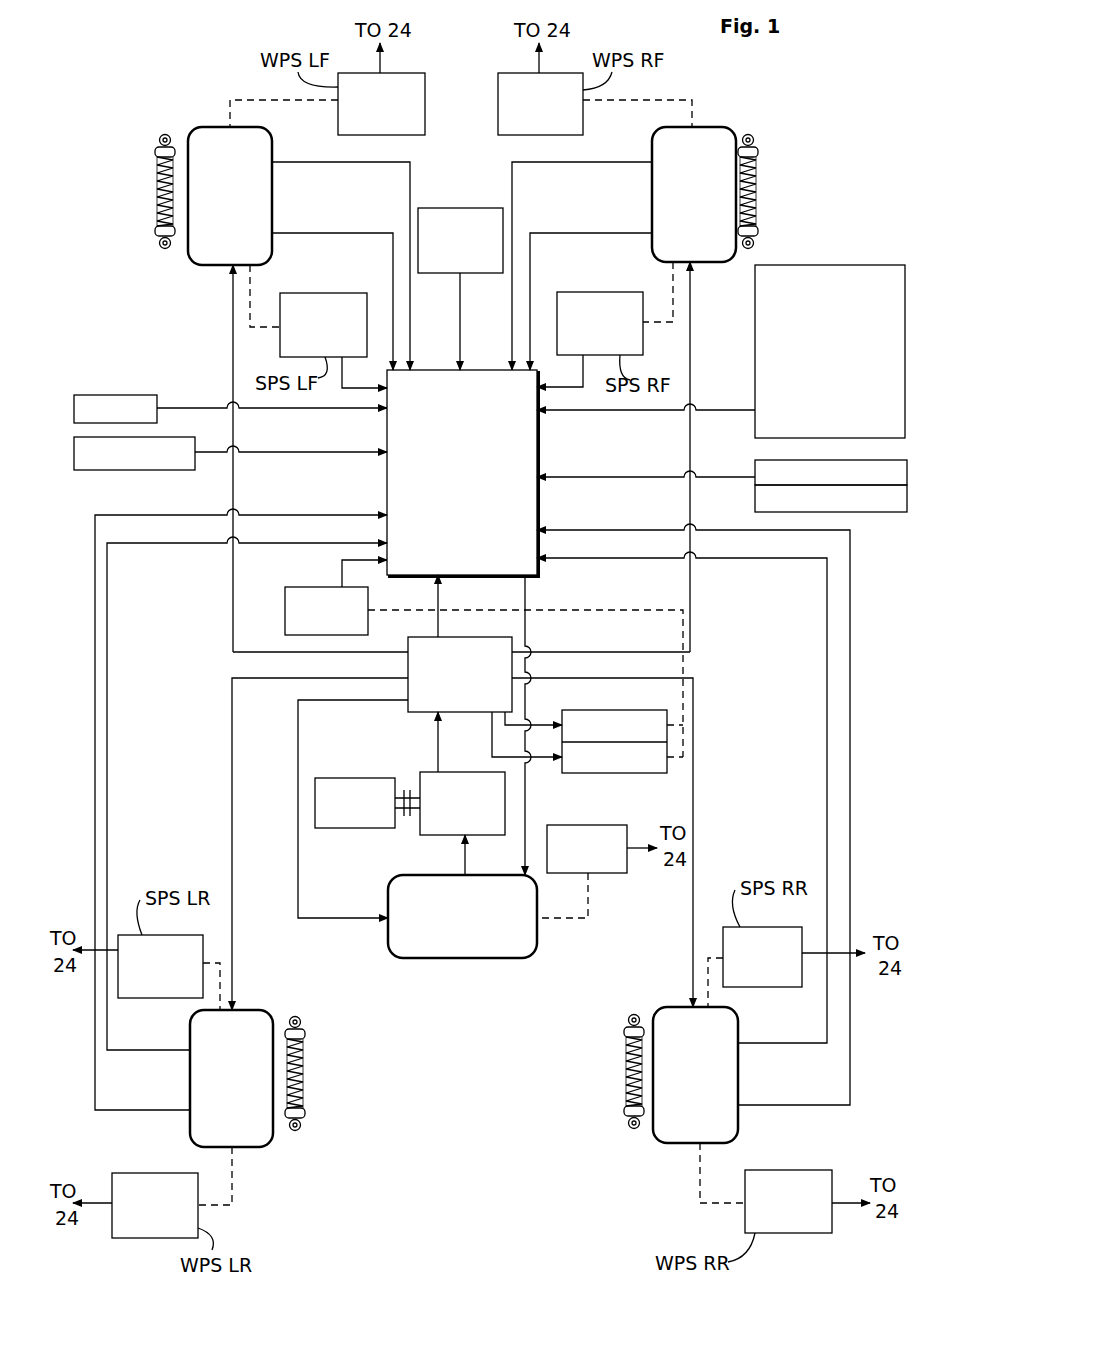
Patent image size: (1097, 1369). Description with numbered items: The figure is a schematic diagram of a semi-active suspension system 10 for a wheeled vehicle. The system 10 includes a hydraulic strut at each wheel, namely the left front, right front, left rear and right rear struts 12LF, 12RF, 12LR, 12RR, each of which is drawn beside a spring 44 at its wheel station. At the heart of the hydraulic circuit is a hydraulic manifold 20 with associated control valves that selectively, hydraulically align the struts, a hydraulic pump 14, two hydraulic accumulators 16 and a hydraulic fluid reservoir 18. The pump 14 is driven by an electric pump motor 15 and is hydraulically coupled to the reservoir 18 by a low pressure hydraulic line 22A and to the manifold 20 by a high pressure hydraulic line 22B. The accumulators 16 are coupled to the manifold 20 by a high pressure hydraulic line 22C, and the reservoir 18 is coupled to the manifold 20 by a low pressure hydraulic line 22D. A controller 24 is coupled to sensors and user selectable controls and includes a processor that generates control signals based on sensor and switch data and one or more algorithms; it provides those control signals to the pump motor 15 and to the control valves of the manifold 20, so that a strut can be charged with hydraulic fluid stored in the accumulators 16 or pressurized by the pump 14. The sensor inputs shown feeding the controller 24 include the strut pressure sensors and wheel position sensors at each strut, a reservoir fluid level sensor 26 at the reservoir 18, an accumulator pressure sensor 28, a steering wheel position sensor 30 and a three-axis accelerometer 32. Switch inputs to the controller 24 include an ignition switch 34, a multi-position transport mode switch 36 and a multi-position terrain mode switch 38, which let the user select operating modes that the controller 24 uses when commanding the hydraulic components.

The semi-active suspension system 10 is at (150, 65).
The left front hydraulic strut 12LF is at (208, 127).
The right front hydraulic strut 12RF is at (728, 127).
The left rear hydraulic strut 12LR is at (252, 1147).
The right rear hydraulic strut 12RR is at (668, 1143).
The hydraulic pump 14 is at (420, 772).
The electric pump motor 15 is at (362, 828).
The hydraulic accumulators 16 is at (628, 710).
The hydraulic fluid reservoir 18 is at (472, 958).
The hydraulic manifold 20 is at (422, 713).
The low pressure hydraulic line 22A is at (465, 865).
The high pressure hydraulic line 22B is at (438, 733).
The high pressure hydraulic line 22C is at (545, 760).
The low pressure hydraulic line 22D is at (298, 810).
The controller 24 is at (540, 452).
The reservoir fluid level sensor 26 is at (600, 873).
The accumulator pressure sensor 28 is at (285, 600).
The steering wheel position sensor 30 is at (440, 208).
The three-axis accelerometer 32 is at (165, 470).
The ignition switch 34 is at (128, 395).
The multi-position transport mode switch 36 is at (887, 473).
The multi-position terrain mode switch 38 is at (866, 502).
The spring 44 is at (155, 180).